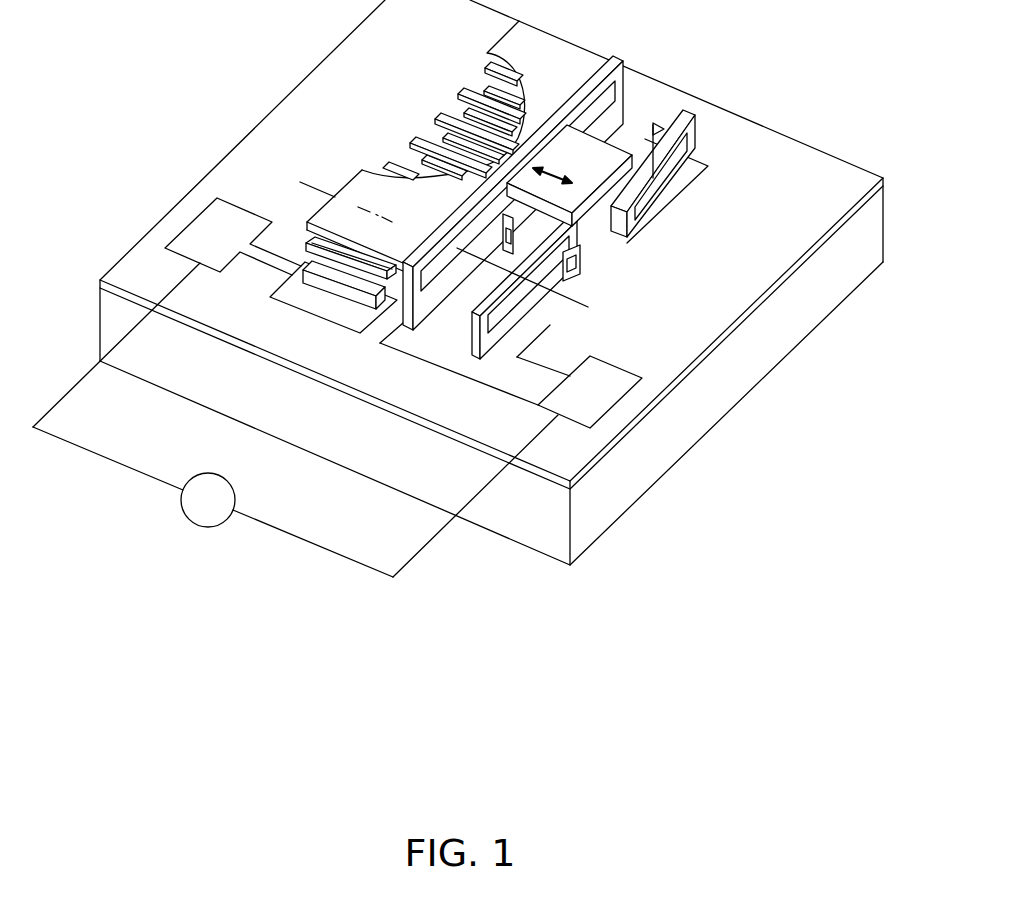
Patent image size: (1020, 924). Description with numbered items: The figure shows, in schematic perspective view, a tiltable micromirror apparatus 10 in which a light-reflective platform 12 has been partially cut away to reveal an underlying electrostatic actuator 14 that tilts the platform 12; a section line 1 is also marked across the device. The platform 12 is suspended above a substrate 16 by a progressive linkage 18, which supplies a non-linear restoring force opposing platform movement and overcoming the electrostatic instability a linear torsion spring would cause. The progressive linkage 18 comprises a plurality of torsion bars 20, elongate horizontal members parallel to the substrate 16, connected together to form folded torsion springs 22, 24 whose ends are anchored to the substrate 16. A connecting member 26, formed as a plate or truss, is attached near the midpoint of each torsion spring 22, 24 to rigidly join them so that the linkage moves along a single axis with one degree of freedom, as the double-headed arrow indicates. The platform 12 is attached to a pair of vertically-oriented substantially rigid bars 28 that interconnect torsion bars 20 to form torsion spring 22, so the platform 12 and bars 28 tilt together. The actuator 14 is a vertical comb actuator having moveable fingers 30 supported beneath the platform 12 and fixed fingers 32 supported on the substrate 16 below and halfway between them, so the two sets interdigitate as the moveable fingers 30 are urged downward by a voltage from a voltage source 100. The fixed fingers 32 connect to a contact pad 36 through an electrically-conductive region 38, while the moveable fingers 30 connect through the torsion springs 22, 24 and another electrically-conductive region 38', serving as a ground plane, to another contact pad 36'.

The section line 1- 1 is at (300, 182).
The tiltable micromirror apparatus 10 is at (668, 578).
The light-reflective platform 12 is at (537, 77).
The electrostatic actuator 14 is at (420, 128).
The substrate 16 is at (527, 525).
The progressive linkage 18 is at (625, 51).
The torsion bars 20 is at (587, 110).
The torsion spring 22 is at (443, 303).
The torsion spring 24 is at (519, 331).
The connecting member 26 is at (562, 169).
The substantially rigid bars 28 is at (412, 300).
The moveable fingers 30 is at (454, 118).
The fixed fingers 32 is at (461, 116).
The contact pad 36 is at (233, 236).
The contact pad 36' is at (590, 392).
The electrically-conductive region 38 is at (333, 313).
The electrically-conductive region 38' is at (525, 374).
The voltage source 100 is at (181, 512).